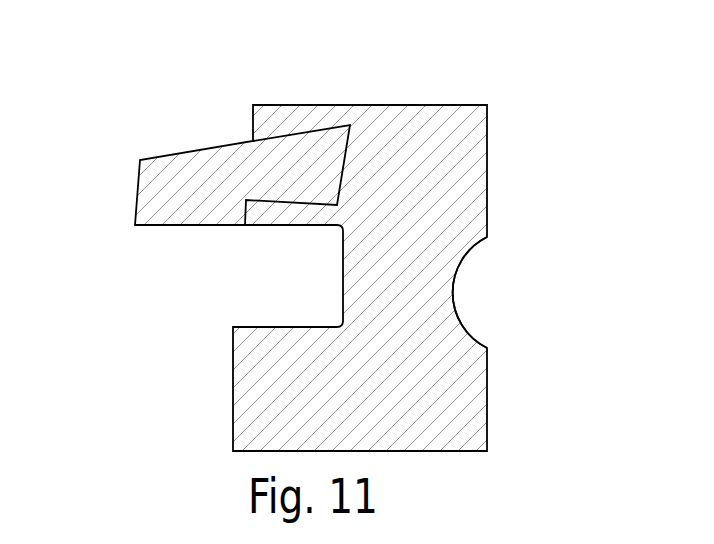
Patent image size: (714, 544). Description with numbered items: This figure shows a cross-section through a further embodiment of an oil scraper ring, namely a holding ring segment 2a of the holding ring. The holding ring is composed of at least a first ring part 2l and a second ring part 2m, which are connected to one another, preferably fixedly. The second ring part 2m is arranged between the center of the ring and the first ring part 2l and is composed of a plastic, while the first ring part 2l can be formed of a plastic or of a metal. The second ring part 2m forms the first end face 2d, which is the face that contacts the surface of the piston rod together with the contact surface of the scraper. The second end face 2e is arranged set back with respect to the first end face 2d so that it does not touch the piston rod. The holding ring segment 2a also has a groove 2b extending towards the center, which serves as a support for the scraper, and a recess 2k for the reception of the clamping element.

The holding ring segment 2a is at (508, 95).
The first end face 2d is at (137, 190).
The second ring part 2m is at (328, 148).
The first ring part 2l is at (413, 128).
The groove 2b is at (283, 275).
The second end face 2e is at (233, 387).
The recess 2k is at (457, 297).